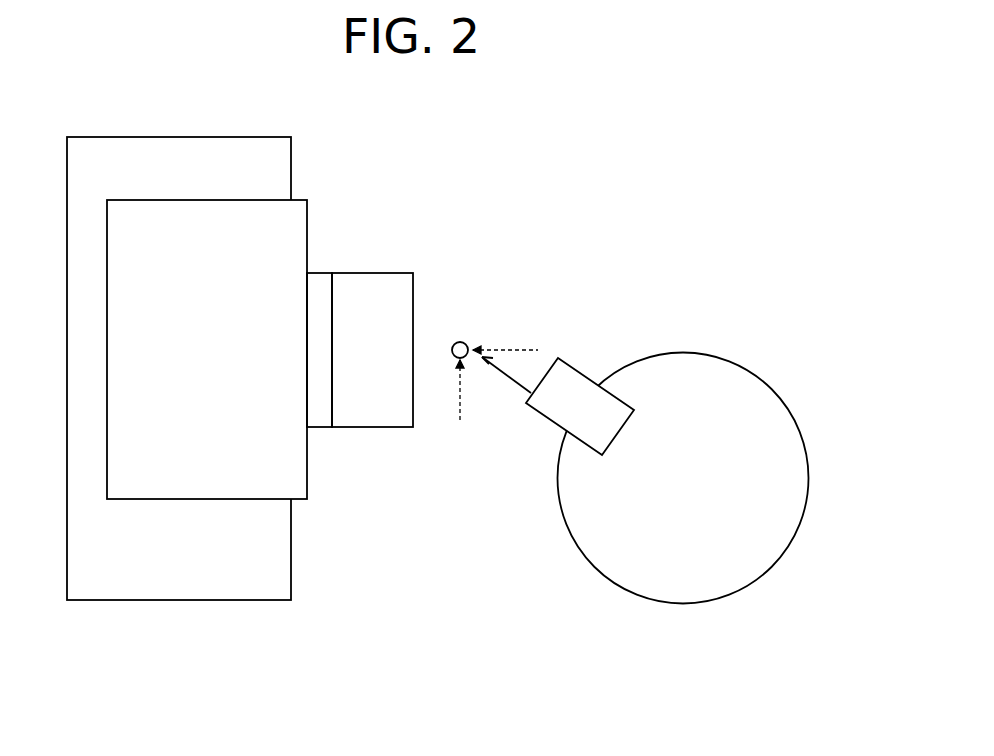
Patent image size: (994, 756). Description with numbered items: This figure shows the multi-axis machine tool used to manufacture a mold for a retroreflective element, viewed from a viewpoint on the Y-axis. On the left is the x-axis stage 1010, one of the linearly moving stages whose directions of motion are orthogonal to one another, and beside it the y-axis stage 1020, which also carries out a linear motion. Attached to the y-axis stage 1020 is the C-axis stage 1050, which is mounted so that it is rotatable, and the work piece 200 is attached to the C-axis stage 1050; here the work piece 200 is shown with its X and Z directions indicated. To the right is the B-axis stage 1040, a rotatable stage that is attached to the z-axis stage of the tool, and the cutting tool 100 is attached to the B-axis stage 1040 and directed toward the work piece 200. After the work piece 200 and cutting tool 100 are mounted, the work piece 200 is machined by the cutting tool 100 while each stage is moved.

The x-axis stage 1010 is at (201, 600).
The y-axis stage 1020 is at (315, 273).
The C-axis stage 1050 is at (372, 427).
The work piece 200 is at (460, 342).
The cutting tool 100 is at (582, 370).
The B-axis stage 1040 is at (683, 352).